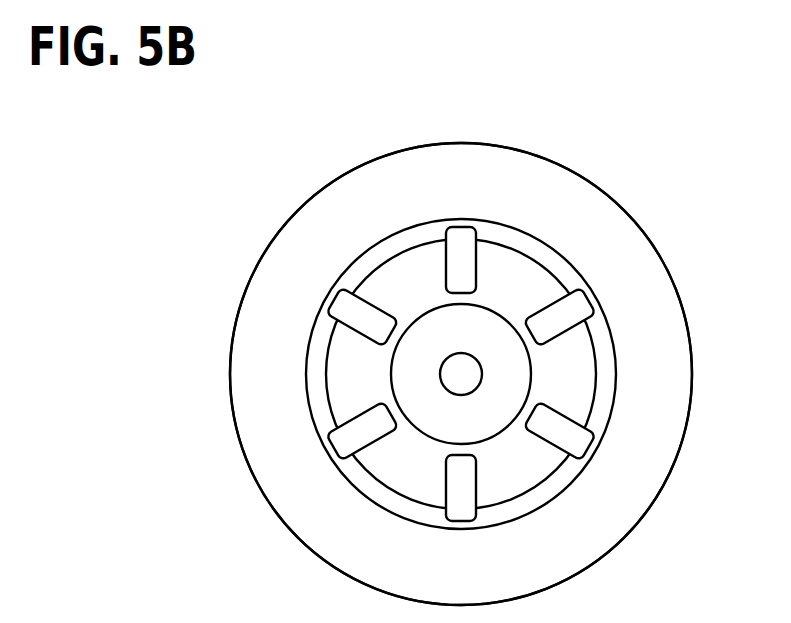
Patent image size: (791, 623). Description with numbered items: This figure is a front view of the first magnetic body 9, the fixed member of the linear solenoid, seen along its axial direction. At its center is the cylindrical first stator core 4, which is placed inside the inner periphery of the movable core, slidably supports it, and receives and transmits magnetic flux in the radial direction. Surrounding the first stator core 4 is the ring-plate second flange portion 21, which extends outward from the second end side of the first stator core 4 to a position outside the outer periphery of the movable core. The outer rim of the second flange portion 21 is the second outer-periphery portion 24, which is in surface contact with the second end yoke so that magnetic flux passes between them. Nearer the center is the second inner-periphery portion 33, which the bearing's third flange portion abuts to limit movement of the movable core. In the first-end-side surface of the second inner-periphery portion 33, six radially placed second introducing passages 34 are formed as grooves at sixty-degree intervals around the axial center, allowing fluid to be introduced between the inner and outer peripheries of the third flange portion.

The first magnetic body 9 is at (628, 160).
The second flange portion 21 is at (673, 275).
The second outer-periphery portion 24 is at (497, 165).
The second inner-periphery portion 33 is at (572, 360).
The first stator core 4 is at (480, 415).
The second introducing passages 34 is at (462, 247).